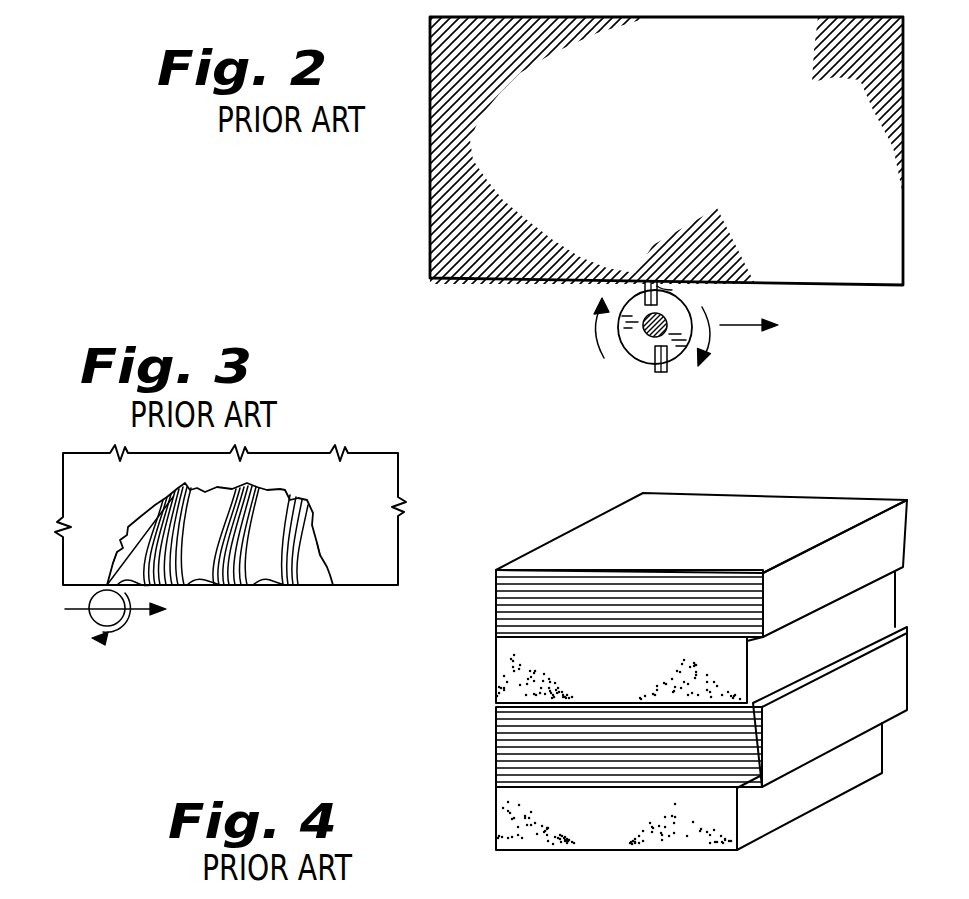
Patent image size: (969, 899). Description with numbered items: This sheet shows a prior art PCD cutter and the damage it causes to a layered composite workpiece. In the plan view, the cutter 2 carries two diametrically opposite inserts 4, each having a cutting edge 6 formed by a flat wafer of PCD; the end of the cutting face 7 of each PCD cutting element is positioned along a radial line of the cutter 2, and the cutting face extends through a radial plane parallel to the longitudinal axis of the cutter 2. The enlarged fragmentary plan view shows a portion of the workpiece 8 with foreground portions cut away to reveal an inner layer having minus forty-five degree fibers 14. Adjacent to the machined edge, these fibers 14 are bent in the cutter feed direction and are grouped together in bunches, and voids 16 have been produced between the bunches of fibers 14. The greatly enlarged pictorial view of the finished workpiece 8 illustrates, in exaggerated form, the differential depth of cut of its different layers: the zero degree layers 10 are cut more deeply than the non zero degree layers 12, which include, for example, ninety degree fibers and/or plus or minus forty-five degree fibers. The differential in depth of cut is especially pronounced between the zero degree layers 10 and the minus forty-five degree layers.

In FIG. 2, the cutter 2 is at (610, 367).
In FIG. 3, the cutter 2 is at (115, 617).
In FIG. 2, the insert 4 is at (668, 364).
In FIG. 2, the cutting edge 6 is at (684, 262).
In FIG. 2, the cutting face 7 is at (657, 285).
In FIG. 2, the workpiece 8 is at (678, 98).
In FIG. 3, the workpiece 8 is at (354, 468).
In FIG. 4, the workpiece 8 is at (604, 506).
In FIG. 4, the 0° layers 10 is at (498, 613).
In FIG. 4, the non 0° layers 12 is at (505, 674).
In FIG. 3, the fibers 14 is at (233, 587).
In FIG. 3, the voids 16 is at (193, 587).